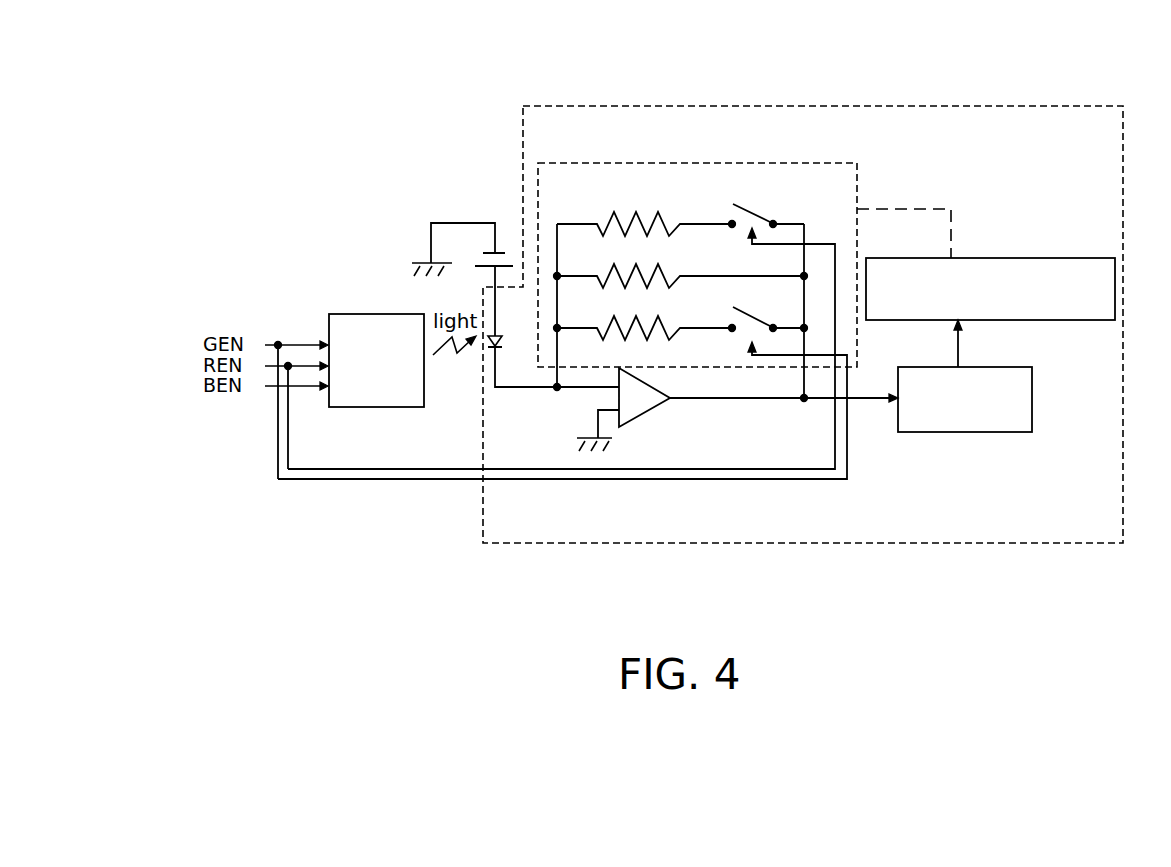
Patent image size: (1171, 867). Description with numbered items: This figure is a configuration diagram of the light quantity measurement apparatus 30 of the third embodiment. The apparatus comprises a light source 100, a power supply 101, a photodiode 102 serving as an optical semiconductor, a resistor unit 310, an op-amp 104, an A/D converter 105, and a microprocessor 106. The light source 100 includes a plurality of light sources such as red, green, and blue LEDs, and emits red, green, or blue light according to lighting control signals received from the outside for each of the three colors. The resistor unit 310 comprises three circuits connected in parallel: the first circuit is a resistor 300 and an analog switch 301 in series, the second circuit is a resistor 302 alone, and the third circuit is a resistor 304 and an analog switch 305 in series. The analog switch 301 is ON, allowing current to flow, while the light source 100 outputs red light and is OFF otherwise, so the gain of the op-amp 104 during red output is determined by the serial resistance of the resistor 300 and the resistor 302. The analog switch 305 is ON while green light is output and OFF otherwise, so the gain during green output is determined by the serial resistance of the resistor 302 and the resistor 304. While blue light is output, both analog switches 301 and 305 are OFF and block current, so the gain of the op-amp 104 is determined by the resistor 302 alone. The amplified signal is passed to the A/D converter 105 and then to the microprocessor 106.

The light quantity measurement apparatus 30 is at (953, 105).
The light source 100 is at (343, 313).
The power supply 101 is at (512, 252).
The photodiode 102 is at (505, 355).
The op-amp 104 is at (647, 417).
The A/D converter 105 is at (1035, 415).
The microprocessor 106 is at (992, 245).
The resistor unit 310 is at (553, 163).
The resistor 300 is at (620, 210).
The analog switch 301 is at (753, 202).
The resistor 302 is at (630, 263).
The resistor 304 is at (618, 315).
The analog switch 305 is at (743, 335).